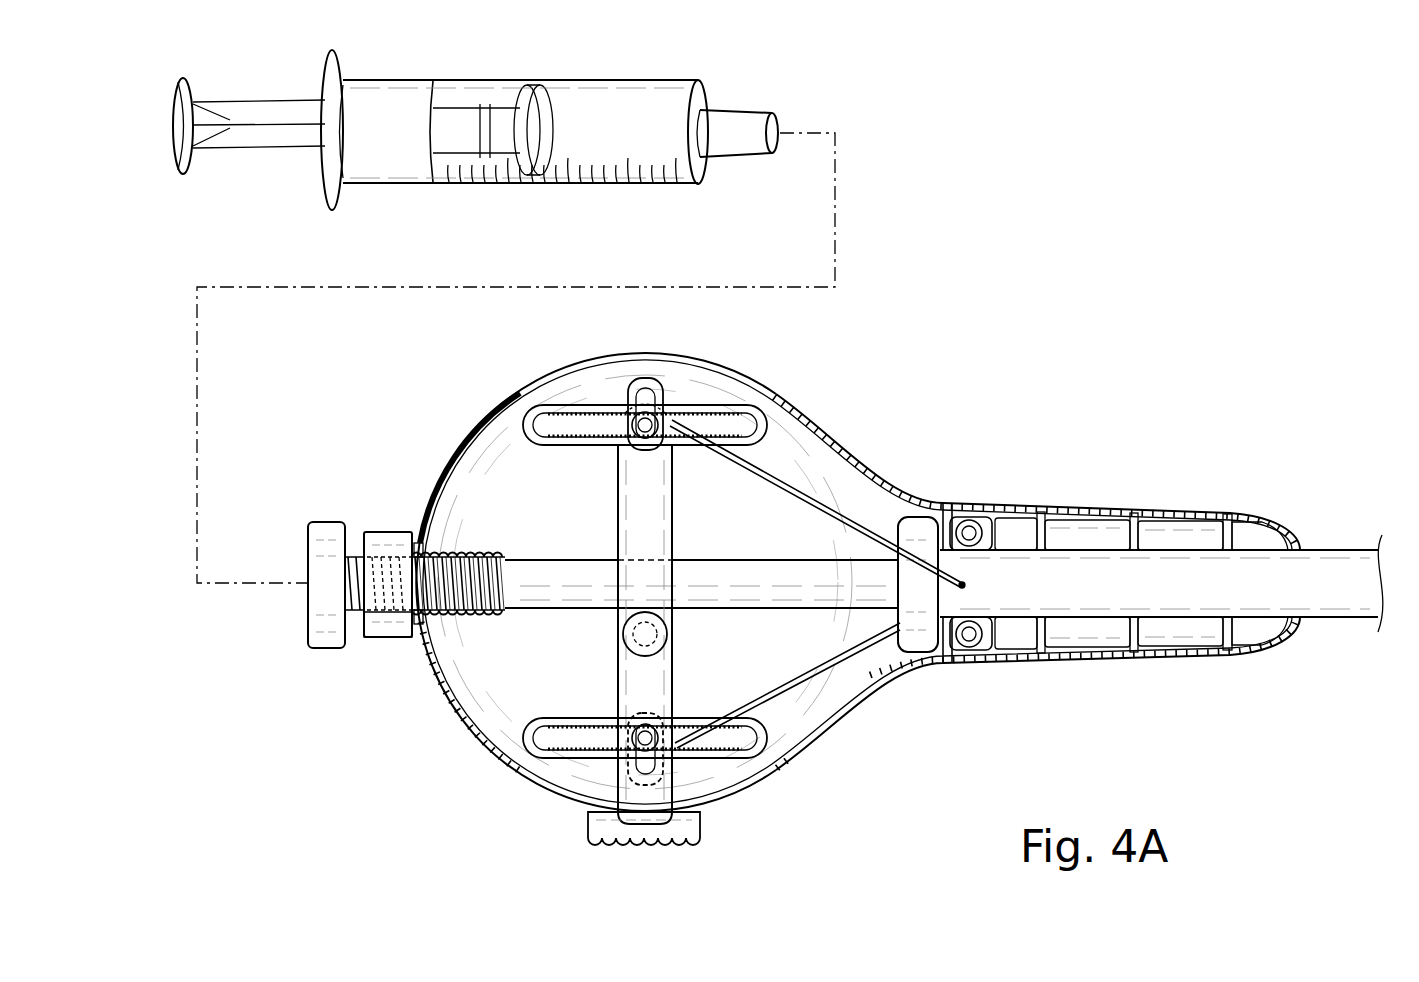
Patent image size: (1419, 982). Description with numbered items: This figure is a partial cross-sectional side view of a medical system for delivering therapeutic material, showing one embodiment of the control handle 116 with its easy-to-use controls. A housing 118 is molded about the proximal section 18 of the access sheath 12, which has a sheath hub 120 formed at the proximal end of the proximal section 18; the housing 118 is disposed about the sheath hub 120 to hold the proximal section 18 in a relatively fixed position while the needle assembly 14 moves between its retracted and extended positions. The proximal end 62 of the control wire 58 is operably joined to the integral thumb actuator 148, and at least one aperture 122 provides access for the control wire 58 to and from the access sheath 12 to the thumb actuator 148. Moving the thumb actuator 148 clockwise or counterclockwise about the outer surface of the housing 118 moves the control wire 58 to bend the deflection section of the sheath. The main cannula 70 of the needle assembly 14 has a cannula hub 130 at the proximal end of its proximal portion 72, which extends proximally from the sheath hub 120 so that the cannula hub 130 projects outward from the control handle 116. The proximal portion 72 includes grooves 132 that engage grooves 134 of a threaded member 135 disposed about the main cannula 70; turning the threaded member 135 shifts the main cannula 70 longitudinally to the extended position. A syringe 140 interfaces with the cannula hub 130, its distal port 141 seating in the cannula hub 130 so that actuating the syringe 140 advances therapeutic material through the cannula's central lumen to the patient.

The access sheath 12 is at (1108, 588).
The needle assembly 14 is at (535, 578).
The proximal section 18 is at (1060, 588).
The control wire 58 is at (806, 493).
The proximal end 62 is at (660, 420).
The main cannula 70 is at (588, 578).
The proximal portion 72 is at (430, 590).
The control handle 116 is at (985, 388).
The housing 118 is at (848, 732).
The sheath hub 120 is at (915, 535).
The aperture 122 is at (968, 548).
The cannula hub 130 is at (325, 522).
The grooves 132 is at (445, 556).
The grooves 134 is at (398, 556).
The threaded member 135 is at (388, 630).
The syringe 140 is at (585, 96).
The distal port 141 is at (748, 110).
The thumb actuator 148 is at (598, 828).